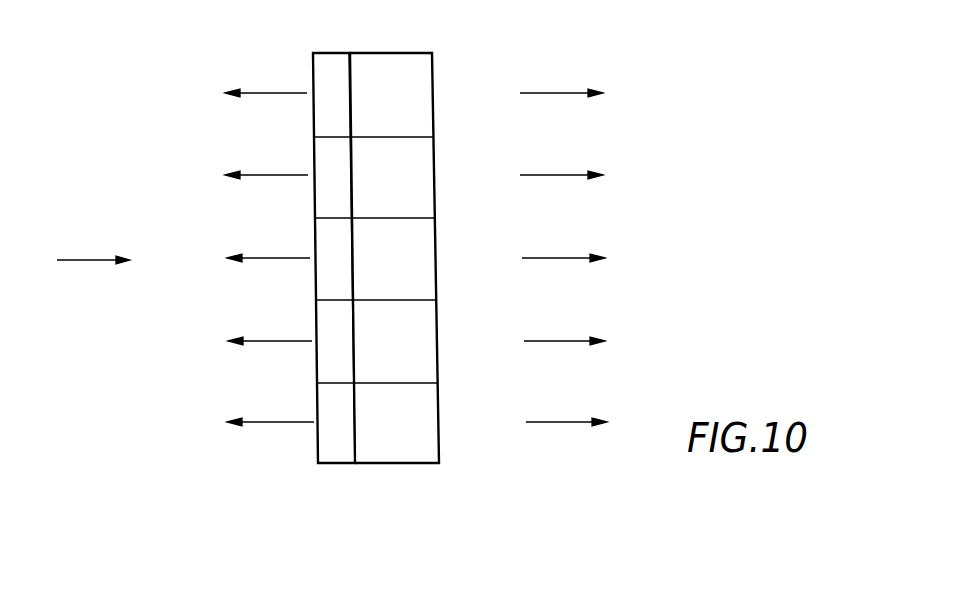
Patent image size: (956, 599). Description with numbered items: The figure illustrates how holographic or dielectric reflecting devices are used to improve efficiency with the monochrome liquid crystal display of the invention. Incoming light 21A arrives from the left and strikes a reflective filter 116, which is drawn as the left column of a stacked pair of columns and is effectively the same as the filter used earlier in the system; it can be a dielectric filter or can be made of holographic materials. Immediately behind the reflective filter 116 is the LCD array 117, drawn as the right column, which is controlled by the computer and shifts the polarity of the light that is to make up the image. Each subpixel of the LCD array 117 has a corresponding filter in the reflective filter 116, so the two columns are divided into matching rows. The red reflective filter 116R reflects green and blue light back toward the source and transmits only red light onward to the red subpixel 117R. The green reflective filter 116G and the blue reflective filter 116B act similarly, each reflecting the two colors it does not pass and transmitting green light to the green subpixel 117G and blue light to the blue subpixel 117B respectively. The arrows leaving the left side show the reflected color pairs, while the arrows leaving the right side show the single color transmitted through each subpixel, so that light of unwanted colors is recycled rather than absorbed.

The incident light beam 21A is at (93, 248).
The reflective filter 116 is at (340, 465).
The LCD array 117 is at (420, 465).
The red reflective filter 116R is at (313, 70).
The green reflective filter 116G is at (314, 149).
The blue reflective filter 116B is at (315, 235).
The red subpixel 117R is at (434, 108).
The green subpixel 117G is at (434, 188).
The blue subpixel 117B is at (435, 275).